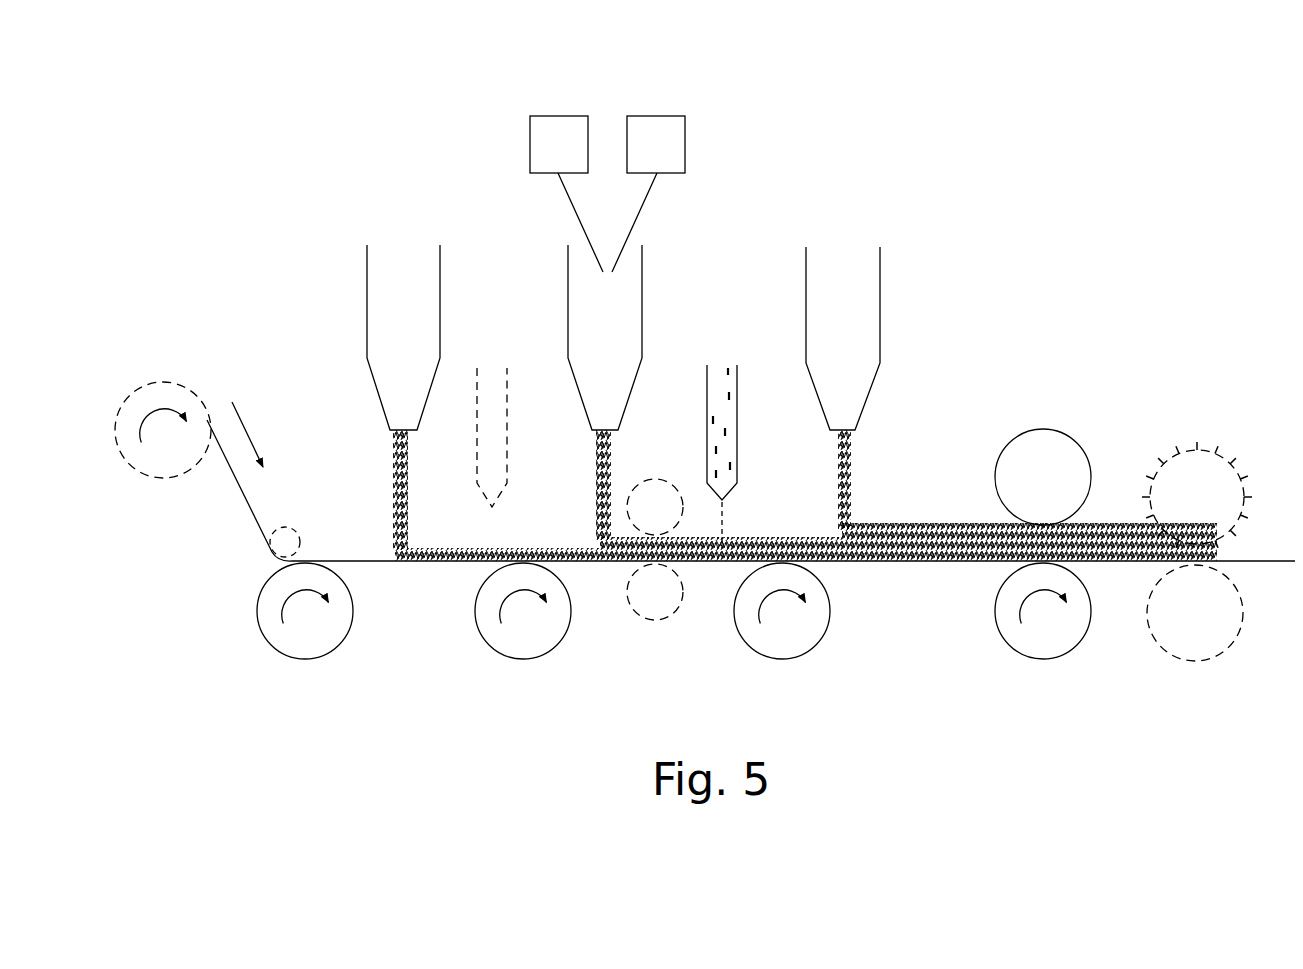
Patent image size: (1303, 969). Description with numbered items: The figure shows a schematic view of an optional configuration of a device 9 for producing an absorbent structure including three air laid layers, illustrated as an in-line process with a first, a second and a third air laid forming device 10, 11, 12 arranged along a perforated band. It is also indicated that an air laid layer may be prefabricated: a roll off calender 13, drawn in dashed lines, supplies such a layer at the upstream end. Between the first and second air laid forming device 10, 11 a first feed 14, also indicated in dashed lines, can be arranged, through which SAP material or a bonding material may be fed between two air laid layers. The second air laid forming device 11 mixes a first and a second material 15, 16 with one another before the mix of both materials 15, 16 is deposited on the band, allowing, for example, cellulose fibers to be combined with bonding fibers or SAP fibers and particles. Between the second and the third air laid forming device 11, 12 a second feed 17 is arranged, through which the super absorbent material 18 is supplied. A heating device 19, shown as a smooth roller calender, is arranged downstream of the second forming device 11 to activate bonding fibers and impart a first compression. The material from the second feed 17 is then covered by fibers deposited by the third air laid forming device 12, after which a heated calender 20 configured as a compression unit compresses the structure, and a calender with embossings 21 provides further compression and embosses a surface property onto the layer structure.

The device 9 is at (1018, 163).
The first air laid forming device 10 is at (387, 223).
The second air laid forming device 11 is at (610, 78).
The third air laid forming device 12 is at (845, 223).
The roll off calender 13 is at (143, 355).
The first feed 14 is at (494, 353).
The first material 15 is at (556, 114).
The second material 16 is at (657, 114).
The second feed 17 is at (718, 355).
The super absorbent material 18 is at (728, 432).
The heating device 19 is at (672, 625).
The heated calender 20 is at (1046, 663).
The calender with embossings 21 is at (1197, 450).